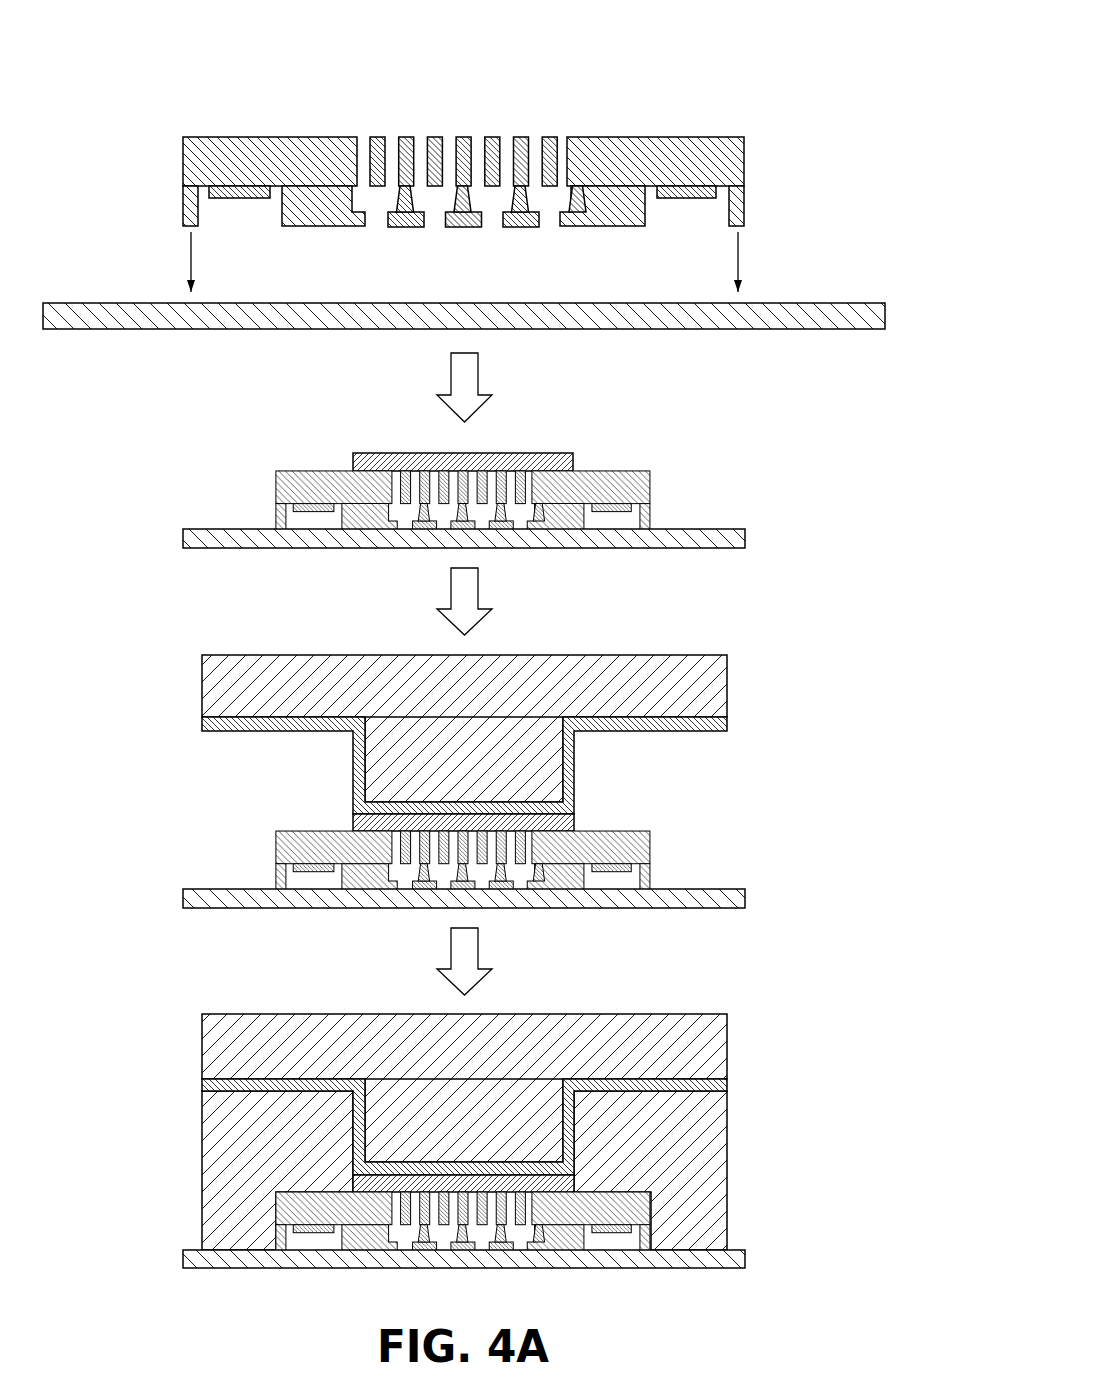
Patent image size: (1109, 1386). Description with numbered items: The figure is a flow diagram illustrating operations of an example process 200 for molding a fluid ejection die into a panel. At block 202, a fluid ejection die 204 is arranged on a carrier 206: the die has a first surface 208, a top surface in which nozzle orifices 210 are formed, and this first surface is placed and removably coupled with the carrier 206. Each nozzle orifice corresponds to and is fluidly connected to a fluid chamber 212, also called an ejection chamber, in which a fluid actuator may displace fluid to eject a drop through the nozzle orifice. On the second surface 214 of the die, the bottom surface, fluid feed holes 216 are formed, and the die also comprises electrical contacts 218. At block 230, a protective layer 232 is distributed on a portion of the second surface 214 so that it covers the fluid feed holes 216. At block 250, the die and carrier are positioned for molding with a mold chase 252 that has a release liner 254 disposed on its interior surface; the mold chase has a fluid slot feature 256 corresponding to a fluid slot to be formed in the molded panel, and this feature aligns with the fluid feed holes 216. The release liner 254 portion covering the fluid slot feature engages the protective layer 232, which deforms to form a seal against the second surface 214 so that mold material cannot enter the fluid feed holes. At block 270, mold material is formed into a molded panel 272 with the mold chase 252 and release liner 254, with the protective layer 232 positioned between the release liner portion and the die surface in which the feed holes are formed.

The example process 200 is at (778, 76).
The block 202 is at (251, 652).
The fluid ejection die 204 is at (464, 710).
The carrier 206 is at (886, 315).
The first surface 208 is at (183, 213).
The nozzle orifices 210 is at (377, 228).
The fluid chamber 212 is at (381, 200).
The second surface 214 is at (183, 165).
The fluid feed holes 216 is at (390, 135).
The electrical contacts 218 is at (241, 199).
The block 230 is at (207, 437).
The protective layer 232 is at (570, 452).
The block 250 is at (188, 645).
The mold chase 252 is at (450, 724).
The release liner 254 is at (423, 946).
The fluid slot feature 256 is at (575, 770).
The block 270 is at (188, 1010).
The molded panel 272 is at (202, 1163).